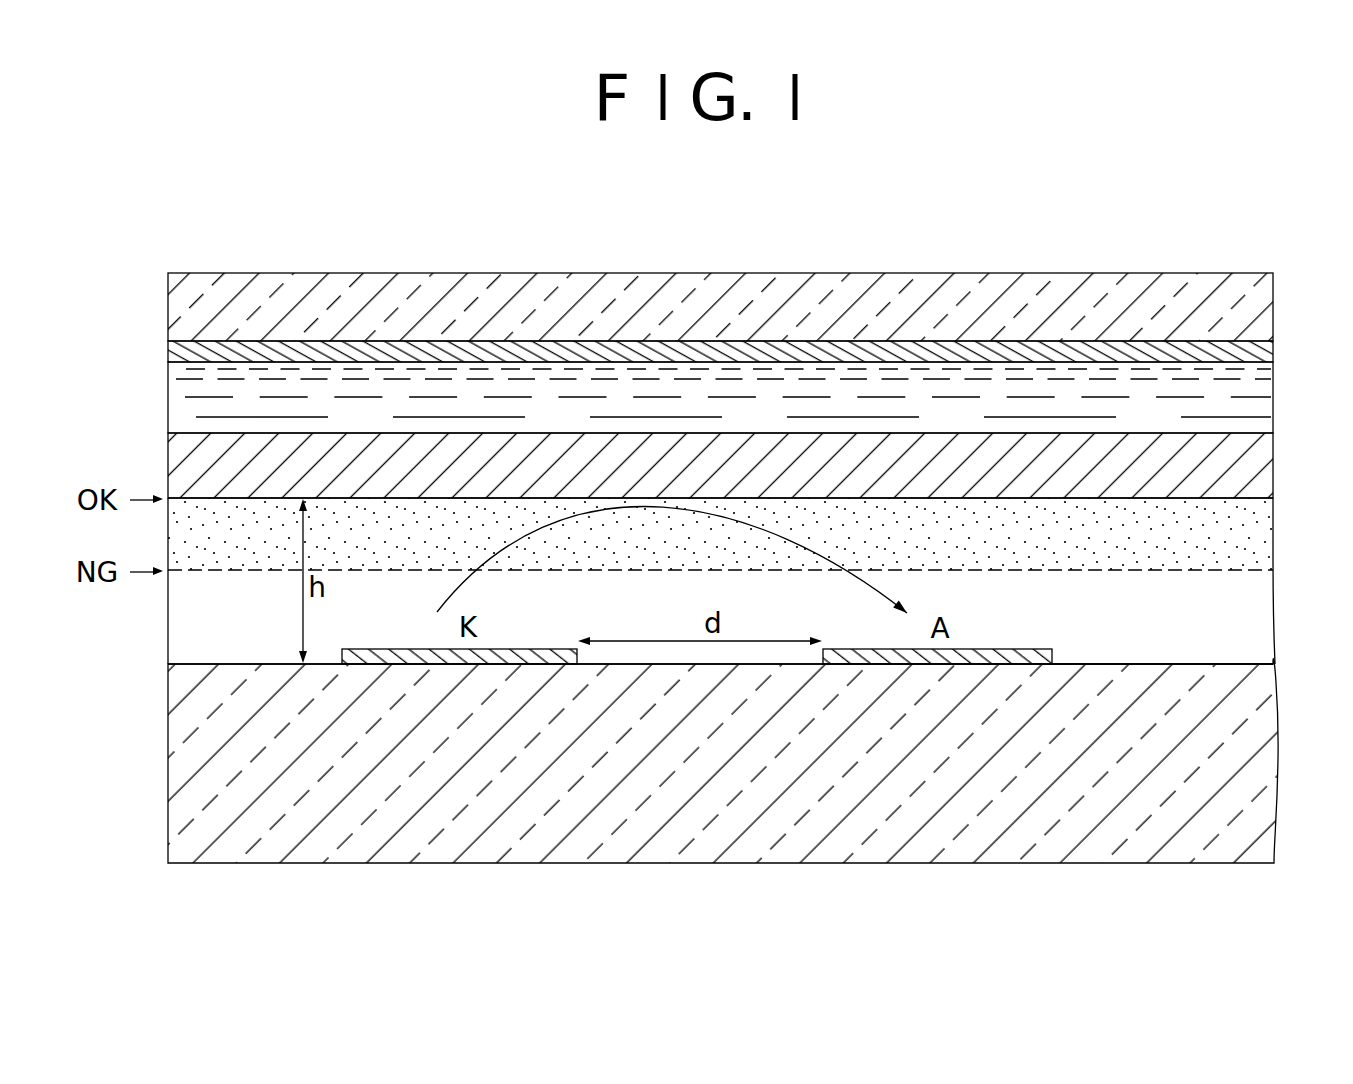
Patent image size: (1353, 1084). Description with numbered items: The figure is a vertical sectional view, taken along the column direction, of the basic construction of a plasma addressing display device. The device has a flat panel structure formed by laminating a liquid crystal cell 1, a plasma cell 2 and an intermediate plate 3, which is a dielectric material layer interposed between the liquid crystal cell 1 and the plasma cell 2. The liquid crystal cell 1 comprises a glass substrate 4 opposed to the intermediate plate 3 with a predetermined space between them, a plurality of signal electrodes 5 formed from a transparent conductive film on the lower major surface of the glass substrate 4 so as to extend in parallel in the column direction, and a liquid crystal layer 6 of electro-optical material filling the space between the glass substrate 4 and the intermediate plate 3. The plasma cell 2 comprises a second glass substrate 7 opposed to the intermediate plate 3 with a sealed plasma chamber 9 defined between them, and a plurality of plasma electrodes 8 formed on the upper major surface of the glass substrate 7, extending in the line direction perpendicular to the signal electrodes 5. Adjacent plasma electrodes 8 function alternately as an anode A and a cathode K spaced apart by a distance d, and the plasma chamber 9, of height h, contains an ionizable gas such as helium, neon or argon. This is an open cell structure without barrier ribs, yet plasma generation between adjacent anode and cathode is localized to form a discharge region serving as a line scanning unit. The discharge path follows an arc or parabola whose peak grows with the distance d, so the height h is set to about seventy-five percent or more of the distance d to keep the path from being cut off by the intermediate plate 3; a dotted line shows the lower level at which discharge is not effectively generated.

The liquid crystal cell 1 is at (729, 360).
The plasma cell 2 is at (757, 711).
The intermediate plate 3 is at (198, 452).
The glass substrate 4 is at (752, 300).
The signal electrodes 5 is at (907, 348).
The liquid crystal layer 6 is at (313, 375).
The glass substrate 7 is at (483, 823).
The plasma electrodes 8 is at (837, 664).
The sealed plasma chamber 9 is at (1162, 785).